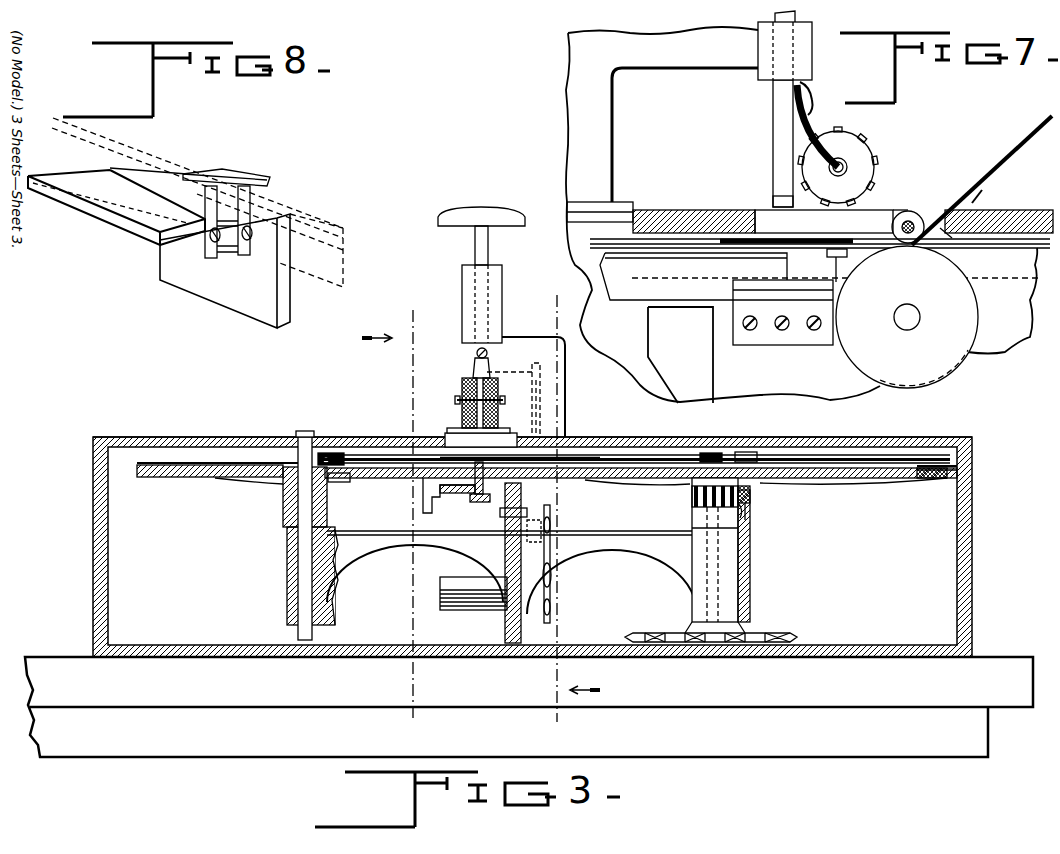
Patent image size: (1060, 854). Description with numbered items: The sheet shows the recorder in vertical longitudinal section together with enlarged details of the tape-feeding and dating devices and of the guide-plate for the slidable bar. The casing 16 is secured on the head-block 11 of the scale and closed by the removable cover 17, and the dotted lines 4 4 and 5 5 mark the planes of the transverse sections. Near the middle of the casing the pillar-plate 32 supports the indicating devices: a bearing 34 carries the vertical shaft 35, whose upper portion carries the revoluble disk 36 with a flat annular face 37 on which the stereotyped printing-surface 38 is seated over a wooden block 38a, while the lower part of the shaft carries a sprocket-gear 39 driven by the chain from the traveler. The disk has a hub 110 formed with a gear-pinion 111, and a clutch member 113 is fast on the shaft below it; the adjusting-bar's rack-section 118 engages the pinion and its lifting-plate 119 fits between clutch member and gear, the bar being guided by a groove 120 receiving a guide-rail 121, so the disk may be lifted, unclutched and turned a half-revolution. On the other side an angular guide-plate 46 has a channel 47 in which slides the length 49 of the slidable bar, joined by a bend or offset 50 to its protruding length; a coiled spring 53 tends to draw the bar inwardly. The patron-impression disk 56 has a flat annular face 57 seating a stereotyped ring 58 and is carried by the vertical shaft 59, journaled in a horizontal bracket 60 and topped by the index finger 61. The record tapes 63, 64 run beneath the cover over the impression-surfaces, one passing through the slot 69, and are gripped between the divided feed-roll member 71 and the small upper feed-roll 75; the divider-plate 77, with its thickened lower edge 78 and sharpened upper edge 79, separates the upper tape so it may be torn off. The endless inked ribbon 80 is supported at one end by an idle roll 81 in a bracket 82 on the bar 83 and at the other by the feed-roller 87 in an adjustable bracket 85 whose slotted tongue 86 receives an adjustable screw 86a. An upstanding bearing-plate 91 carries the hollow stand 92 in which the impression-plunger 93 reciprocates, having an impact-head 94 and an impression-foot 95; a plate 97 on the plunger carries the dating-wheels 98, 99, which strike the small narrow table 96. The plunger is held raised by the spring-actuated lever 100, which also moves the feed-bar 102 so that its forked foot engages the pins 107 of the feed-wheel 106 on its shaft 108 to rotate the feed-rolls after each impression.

In FIG. 3, the dotted line 4 4 is at (410, 520).
In FIG. 3, the dotted line 5 5 is at (555, 509).
In FIG. 3, the head-block 11 is at (838, 745).
In FIG. 3, the casing 16 is at (965, 565).
In FIG. 7, the cover 17 is at (697, 212).
In FIG. 3, the cover 17 is at (200, 437).
In FIG. 7, the pillar-plate 32 is at (1005, 345).
In FIG. 3, the pillar-plate 32 is at (500, 655).
In FIG. 3, the bearing 34 is at (692, 594).
In FIG. 3, the vertical shaft 35 is at (715, 580).
In FIG. 3, the revoluble disk 36 is at (865, 479).
In FIG. 3, the flat annular face 37 is at (920, 479).
In FIG. 3, the stereotyped printing-surface 38 is at (940, 467).
In FIG. 3, the wooden block 38a is at (957, 470).
In FIG. 3, the sprocket-gear 39 is at (790, 635).
In FIG. 8, the guide-plate 46 is at (225, 295).
In FIG. 7, the guide-plate 46 is at (768, 335).
In FIG. 3, the guide-plate 46 is at (500, 500).
In FIG. 8, the channel or groove 47 is at (112, 174).
In FIG. 3, the channel or groove 47 is at (455, 493).
In FIG. 8, the length of slidable bar 49 is at (326, 278).
In FIG. 7, the length of slidable bar 49 is at (645, 290).
In FIG. 3, the length of slidable bar 49 is at (482, 500).
In FIG. 3, the bend or offset 50 is at (423, 492).
In FIG. 3, the coiled spring 53 is at (625, 548).
In FIG. 3, the patron-impression disk 56 is at (183, 478).
In FIG. 3, the flat annular face 57 is at (222, 479).
In FIG. 3, the stereotyped plate or ring 58 is at (147, 462).
In FIG. 3, the vertical shaft 59 is at (298, 630).
In FIG. 3, the horizontal bracket 60 is at (390, 545).
In FIG. 3, the index finger or pointer 61 is at (358, 437).
In FIG. 7, the record tape or ribbon 63 is at (608, 242).
In FIG. 3, the record tape or ribbon 63 is at (512, 437).
In FIG. 7, the record tape or ribbon 64 is at (1032, 262).
In FIG. 3, the record tape or ribbon 64 is at (445, 555).
In FIG. 7, the slot 69 is at (878, 212).
In FIG. 3, the slot 69 is at (450, 440).
In FIG. 7, the feed-roll member 71 is at (945, 370).
In FIG. 7, the feed-roll 75 is at (915, 214).
In FIG. 7, the divider-plate 77 is at (975, 210).
In FIG. 7, the lower thickened edge 78 is at (955, 240).
In FIG. 7, the upper edge 79 is at (985, 200).
In FIG. 7, the endless inked ribbon 80 is at (812, 255).
In FIG. 3, the endless inked ribbon 80 is at (680, 428).
In FIG. 3, the idle roll 81 is at (318, 458).
In FIG. 3, the bracket 82 is at (340, 465).
In FIG. 3, the bar 83 is at (718, 430).
In FIG. 3, the adjustable bracket 85 is at (740, 457).
In FIG. 3, the slotted tongue 86 is at (760, 459).
In FIG. 3, the adjustable screw 86a is at (760, 482).
In FIG. 3, the feed-roller 87 is at (722, 462).
In FIG. 7, the bearing-plate 91 is at (640, 211).
In FIG. 7, the hollow stand 92 is at (612, 128).
In FIG. 3, the hollow stand 92 is at (525, 340).
In FIG. 7, the impression-plunger 93 is at (773, 122).
In FIG. 3, the impression-plunger 93 is at (475, 248).
In FIG. 3, the impact-head 94 is at (480, 210).
In FIG. 7, the impression-foot 95 is at (773, 203).
In FIG. 3, the impression-foot 95 is at (462, 428).
In FIG. 8, the table 96 is at (238, 178).
In FIG. 7, the table 96 is at (842, 257).
In FIG. 7, the plate 97 is at (808, 135).
In FIG. 3, the plate 97 is at (476, 355).
In FIG. 3, the impression-wheel 98 is at (500, 400).
In FIG. 7, the impression-wheel 99 is at (865, 148).
In FIG. 3, the impression-wheel 99 is at (465, 385).
In FIG. 3, the spring-actuated lever 100 is at (512, 362).
In FIG. 3, the feed-bar 102 is at (540, 390).
In FIG. 3, the feed-wheel 106 is at (552, 605).
In FIG. 3, the pins or studs 107 is at (545, 553).
In FIG. 3, the shaft 108 is at (552, 578).
In FIG. 3, the hub 110 is at (700, 487).
In FIG. 3, the gear-pinion 111 is at (700, 497).
In FIG. 3, the clutch member 113 is at (696, 520).
In FIG. 3, the rack-section 118 is at (750, 492).
In FIG. 3, the lifting-plate 119 is at (750, 535).
In FIG. 3, the groove 120 is at (750, 505).
In FIG. 3, the guide-rail 121 is at (750, 518).